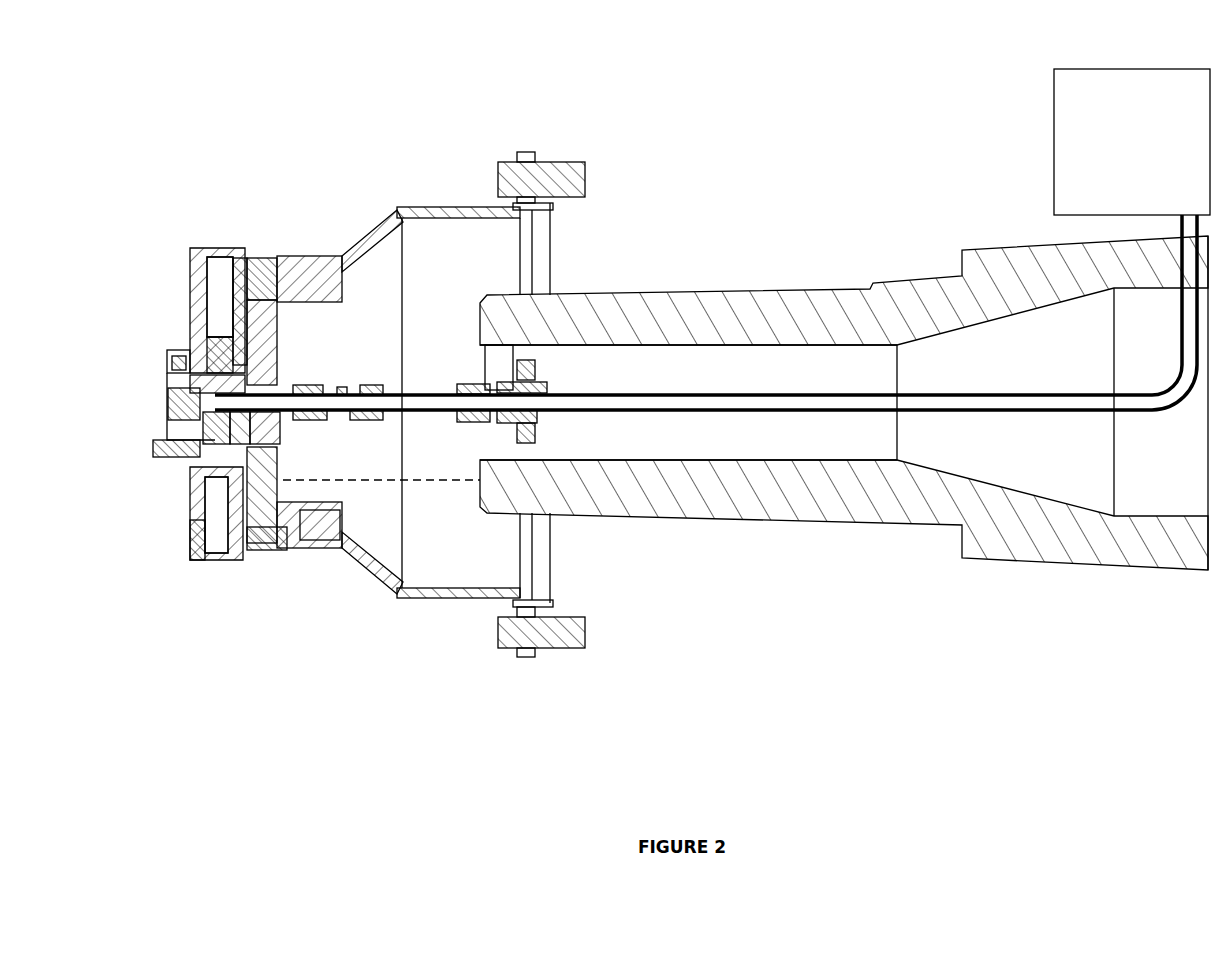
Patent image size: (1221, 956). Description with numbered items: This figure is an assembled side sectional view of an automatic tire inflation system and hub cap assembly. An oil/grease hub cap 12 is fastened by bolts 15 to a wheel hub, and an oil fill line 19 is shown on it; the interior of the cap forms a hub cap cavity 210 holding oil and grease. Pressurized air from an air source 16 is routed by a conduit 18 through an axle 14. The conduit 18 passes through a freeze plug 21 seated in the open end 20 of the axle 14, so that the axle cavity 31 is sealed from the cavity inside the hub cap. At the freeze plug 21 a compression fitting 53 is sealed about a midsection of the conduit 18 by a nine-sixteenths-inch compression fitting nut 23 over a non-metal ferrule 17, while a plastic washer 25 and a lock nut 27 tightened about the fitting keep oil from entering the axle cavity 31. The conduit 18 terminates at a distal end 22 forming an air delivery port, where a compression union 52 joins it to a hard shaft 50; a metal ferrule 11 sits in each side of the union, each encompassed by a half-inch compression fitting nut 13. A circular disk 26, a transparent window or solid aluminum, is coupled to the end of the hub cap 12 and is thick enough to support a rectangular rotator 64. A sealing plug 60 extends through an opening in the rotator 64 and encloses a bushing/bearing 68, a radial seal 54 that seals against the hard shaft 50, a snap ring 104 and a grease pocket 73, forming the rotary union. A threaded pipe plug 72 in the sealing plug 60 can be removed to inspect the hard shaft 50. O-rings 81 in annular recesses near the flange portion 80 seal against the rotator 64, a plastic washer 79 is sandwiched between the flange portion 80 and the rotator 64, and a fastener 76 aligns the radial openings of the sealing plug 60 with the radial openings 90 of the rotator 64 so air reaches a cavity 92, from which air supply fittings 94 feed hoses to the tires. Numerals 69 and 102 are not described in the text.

The metal ferrule 11 is at (310, 386).
The oil/grease hub cap 12 is at (397, 210).
The compression fitting nut 13 is at (299, 386).
The axle 14 is at (847, 289).
The bolts 15 is at (583, 163).
The air source 16 is at (1054, 143).
The non-metal ferrule 17 is at (482, 385).
The conduit 18 is at (785, 393).
The oil fill line 19 is at (322, 505).
The open end of the axle 20 is at (497, 516).
The freeze plug 21 is at (518, 360).
The distal end of the conduit 22 is at (352, 419).
The compression fitting nut 23 is at (462, 384).
The plastic washer 25 is at (513, 430).
The circular disk 26 is at (286, 551).
The lock nut 27 is at (533, 378).
The axle cavity 31 is at (704, 380).
The hard shaft 50 is at (303, 495).
The compression union 52 is at (343, 388).
The compression fitting 53 is at (500, 384).
The radial seal 54 is at (262, 424).
The sealing plug 60 is at (167, 427).
The rectangular rotator 64 is at (192, 520).
The bushing/bearing 68 is at (218, 472).
The inner block 69 is at (235, 417).
The threaded pipe plug 72 is at (178, 418).
The grease pocket 73 is at (242, 446).
The fastener 76 is at (153, 455).
The plastic washer 79 is at (187, 372).
The flange portion 80 is at (183, 350).
The o-rings 81 is at (190, 378).
The radial openings of the rectangular rotator 90 is at (195, 250).
The cavity 92 is at (213, 340).
The air supply fittings 94 is at (207, 268).
The spacer column 102 is at (242, 258).
The snap ring 104 is at (263, 258).
The hub cap cavity 210 is at (419, 350).